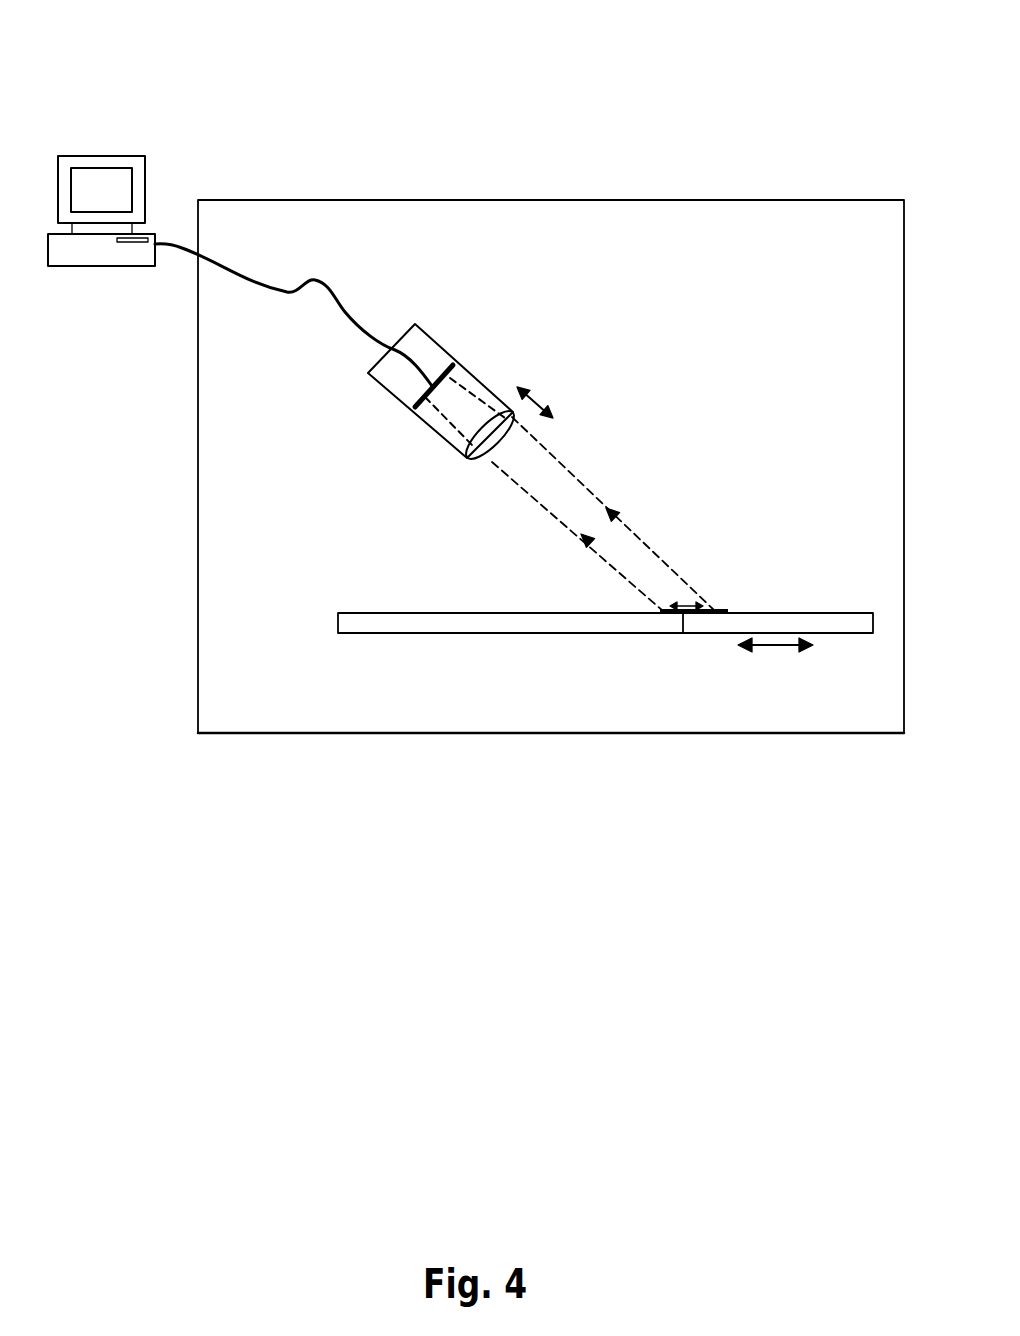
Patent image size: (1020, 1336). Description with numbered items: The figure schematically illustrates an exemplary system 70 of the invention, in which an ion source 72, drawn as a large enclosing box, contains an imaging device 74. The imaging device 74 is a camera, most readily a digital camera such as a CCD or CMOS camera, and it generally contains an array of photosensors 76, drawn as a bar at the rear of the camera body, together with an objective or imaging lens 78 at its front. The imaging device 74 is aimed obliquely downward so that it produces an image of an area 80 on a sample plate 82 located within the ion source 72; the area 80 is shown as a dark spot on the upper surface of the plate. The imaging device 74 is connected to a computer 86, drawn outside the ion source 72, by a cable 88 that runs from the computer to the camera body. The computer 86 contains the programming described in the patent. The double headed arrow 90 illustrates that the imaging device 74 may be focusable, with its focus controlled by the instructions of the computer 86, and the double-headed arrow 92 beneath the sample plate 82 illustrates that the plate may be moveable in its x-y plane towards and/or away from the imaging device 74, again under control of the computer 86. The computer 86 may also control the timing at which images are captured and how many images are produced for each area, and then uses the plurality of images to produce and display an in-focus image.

The system 70 is at (288, 115).
The ion source 72 is at (551, 466).
The imaging device 74 is at (473, 385).
The array of photosensors 76 is at (422, 408).
The objective lens 78 is at (488, 440).
The area 80 is at (683, 633).
The sample plate 82 is at (838, 620).
The computer 86 is at (63, 266).
The cable 88 is at (292, 293).
The double headed arrow 90 is at (537, 402).
The double-headed arrow 92 is at (772, 648).